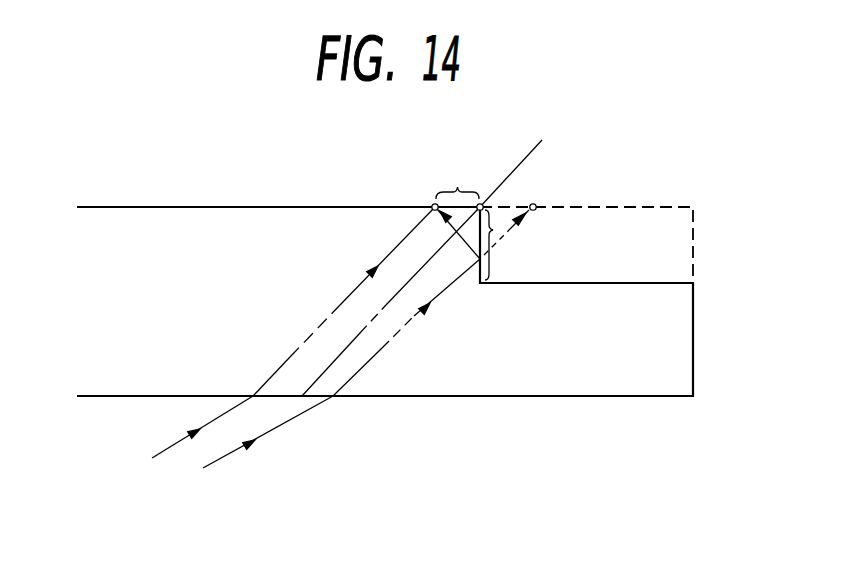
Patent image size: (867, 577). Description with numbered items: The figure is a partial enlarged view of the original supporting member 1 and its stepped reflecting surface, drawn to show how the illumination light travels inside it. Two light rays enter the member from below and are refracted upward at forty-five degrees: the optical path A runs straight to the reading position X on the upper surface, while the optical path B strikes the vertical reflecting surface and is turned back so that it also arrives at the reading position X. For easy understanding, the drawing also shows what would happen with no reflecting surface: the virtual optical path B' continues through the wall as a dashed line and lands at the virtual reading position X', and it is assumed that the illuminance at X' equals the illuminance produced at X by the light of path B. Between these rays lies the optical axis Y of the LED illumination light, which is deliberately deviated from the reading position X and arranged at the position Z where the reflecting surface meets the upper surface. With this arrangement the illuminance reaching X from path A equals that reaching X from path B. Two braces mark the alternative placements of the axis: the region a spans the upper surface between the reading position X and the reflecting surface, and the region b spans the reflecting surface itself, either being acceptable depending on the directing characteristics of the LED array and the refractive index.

The transparent body 1 is at (201, 217).
The optical path A is at (293, 332).
The optical path B is at (341, 363).
The virtual optical path B' is at (497, 234).
The reading position X is at (412, 177).
The virtual reading position X' is at (546, 187).
The optical axis of the illumination light Y is at (431, 255).
The position on the reflecting surface Z is at (481, 203).
The region a is at (457, 187).
The region b is at (498, 245).